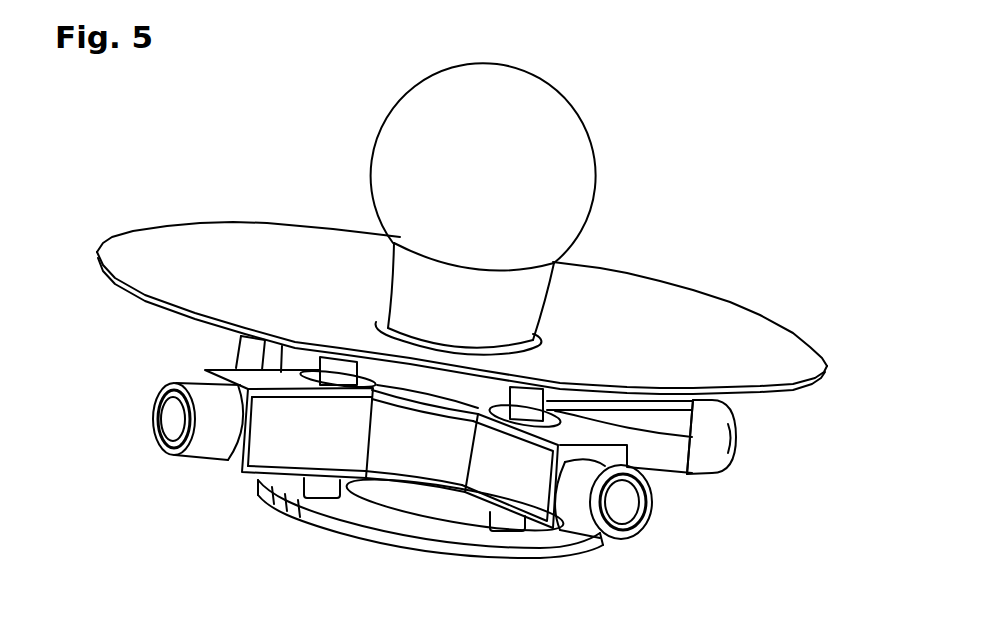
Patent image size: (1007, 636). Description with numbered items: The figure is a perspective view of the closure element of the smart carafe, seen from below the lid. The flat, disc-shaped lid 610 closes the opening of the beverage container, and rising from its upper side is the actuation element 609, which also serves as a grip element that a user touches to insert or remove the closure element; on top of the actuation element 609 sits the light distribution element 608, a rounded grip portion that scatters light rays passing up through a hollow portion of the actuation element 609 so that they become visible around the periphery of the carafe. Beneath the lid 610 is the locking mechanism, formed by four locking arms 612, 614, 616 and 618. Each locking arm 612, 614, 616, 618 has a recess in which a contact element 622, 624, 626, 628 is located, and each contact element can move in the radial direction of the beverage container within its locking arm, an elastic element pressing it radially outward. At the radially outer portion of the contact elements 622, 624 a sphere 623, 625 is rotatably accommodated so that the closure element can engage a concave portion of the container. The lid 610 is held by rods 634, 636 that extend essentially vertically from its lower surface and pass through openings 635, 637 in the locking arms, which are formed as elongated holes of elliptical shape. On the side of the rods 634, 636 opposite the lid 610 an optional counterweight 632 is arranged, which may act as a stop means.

The light distribution element 608 is at (532, 140).
The actuation element 609 is at (512, 317).
The lid 610 is at (767, 355).
The locking arm 612 is at (258, 451).
The locking arm 614 is at (503, 475).
The locking arm 616 is at (672, 472).
The locking arm 618 is at (282, 361).
The contact element 622 is at (205, 429).
The sphere 623 is at (167, 417).
The contact element 624 is at (572, 500).
The sphere 625 is at (632, 507).
The contact element 626 is at (707, 447).
The contact element 628 is at (242, 349).
The counterweight 632 is at (470, 545).
The rod 634 is at (323, 490).
The opening 635 is at (307, 374).
The rod 636 is at (517, 530).
The opening 637 is at (737, 436).